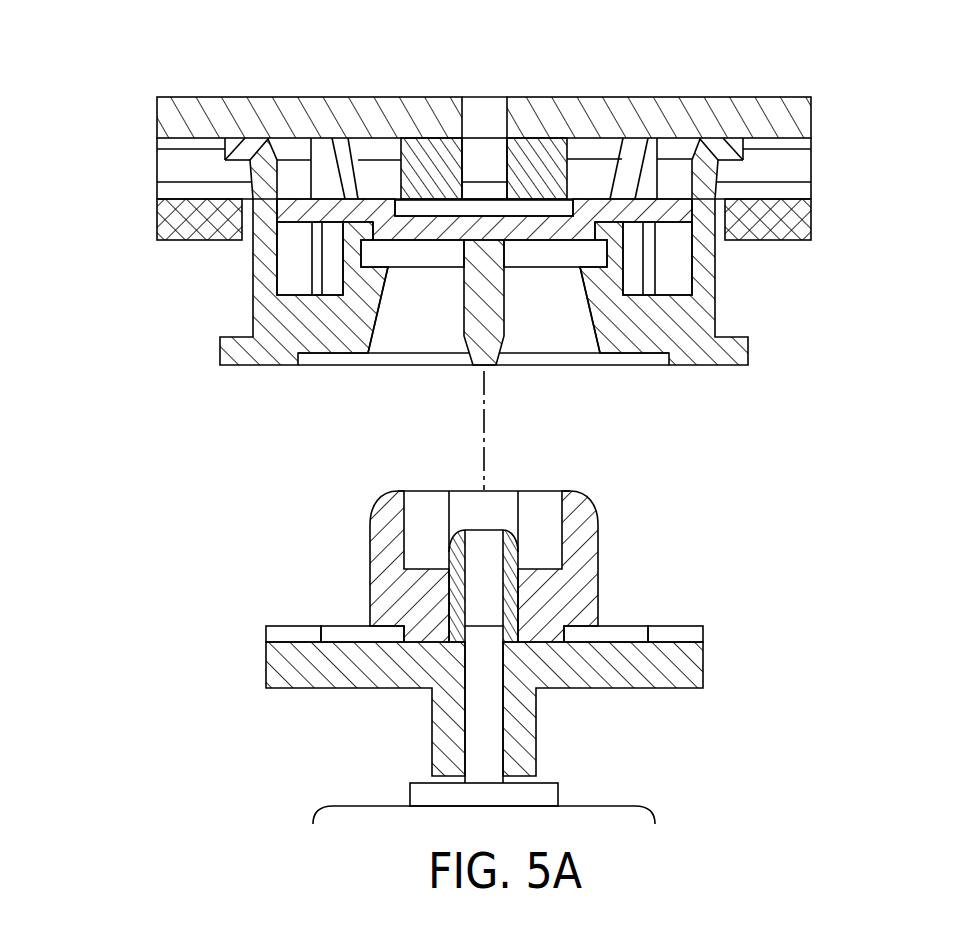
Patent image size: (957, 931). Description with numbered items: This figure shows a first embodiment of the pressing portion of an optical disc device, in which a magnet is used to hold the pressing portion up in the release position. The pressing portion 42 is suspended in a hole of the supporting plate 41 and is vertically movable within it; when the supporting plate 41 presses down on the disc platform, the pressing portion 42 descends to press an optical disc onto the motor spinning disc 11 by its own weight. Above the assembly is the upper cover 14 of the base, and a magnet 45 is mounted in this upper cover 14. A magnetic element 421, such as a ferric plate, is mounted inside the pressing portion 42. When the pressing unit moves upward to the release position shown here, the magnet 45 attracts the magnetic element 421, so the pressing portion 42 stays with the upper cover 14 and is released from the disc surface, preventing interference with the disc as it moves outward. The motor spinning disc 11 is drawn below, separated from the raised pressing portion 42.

The motor spinning disc 11 is at (383, 499).
The upper cover 14 is at (182, 117).
The supporting plate 41 is at (793, 168).
The pressing portion 42 is at (715, 288).
The magnetic element 421 is at (540, 255).
The magnet 45 is at (430, 155).